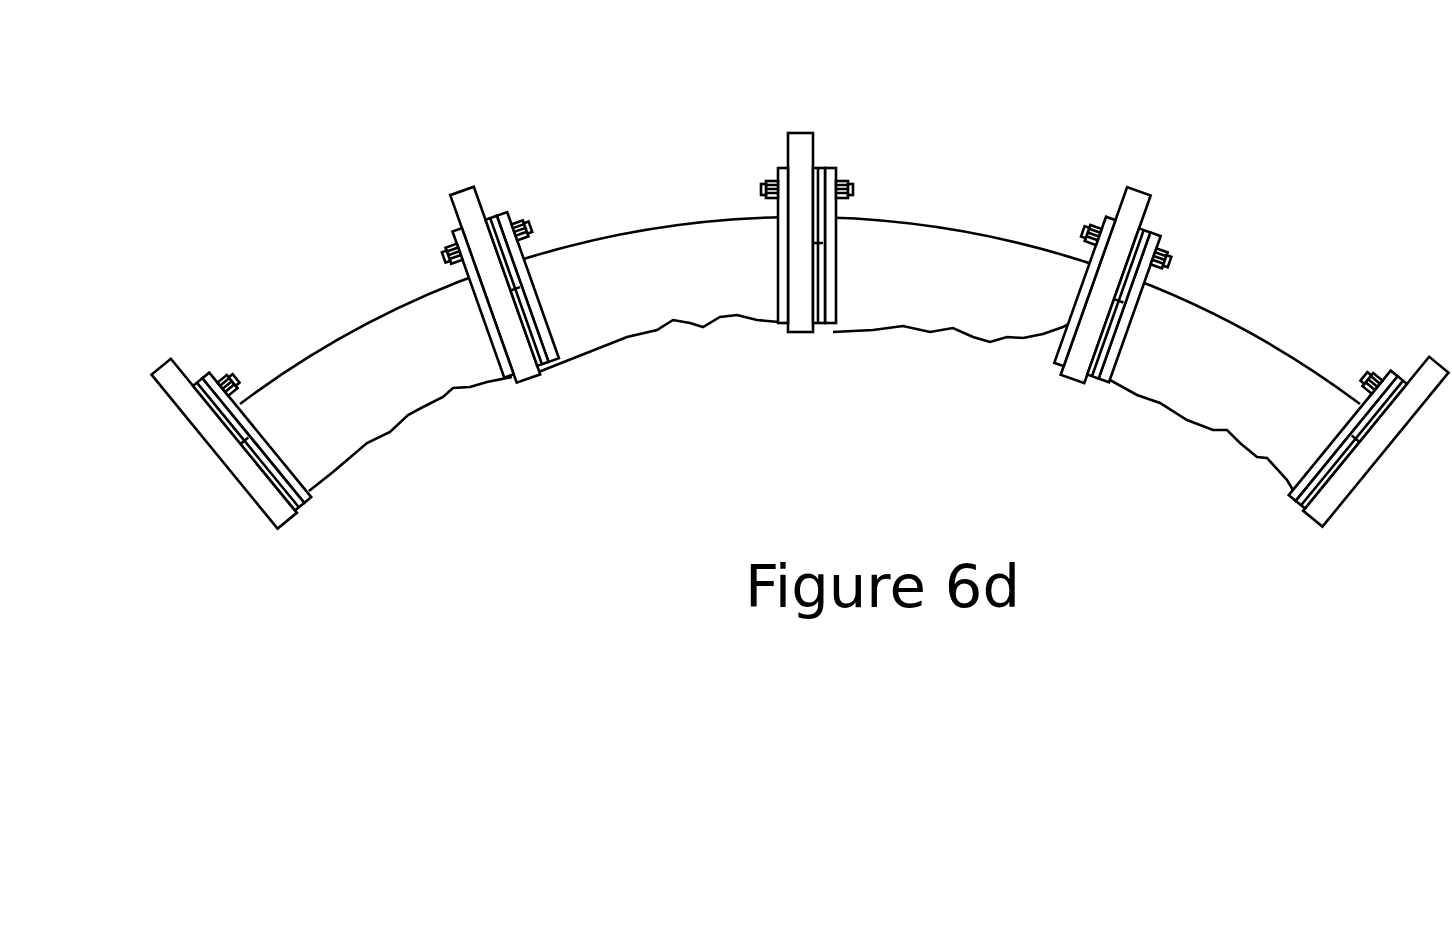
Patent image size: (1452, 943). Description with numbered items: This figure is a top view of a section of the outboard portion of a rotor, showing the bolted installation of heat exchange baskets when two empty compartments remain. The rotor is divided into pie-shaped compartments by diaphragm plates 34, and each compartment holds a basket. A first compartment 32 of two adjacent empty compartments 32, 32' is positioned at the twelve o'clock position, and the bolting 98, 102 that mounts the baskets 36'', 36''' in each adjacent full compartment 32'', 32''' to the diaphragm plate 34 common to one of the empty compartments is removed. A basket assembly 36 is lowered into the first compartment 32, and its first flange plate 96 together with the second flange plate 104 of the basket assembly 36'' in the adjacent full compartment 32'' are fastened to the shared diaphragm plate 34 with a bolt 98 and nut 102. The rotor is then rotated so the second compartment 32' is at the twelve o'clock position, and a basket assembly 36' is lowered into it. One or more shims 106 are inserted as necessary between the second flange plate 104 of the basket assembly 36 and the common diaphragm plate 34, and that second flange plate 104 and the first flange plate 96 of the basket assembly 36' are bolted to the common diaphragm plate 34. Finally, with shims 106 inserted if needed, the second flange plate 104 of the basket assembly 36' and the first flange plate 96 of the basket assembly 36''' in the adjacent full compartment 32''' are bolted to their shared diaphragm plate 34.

The compartment 32 is at (955, 192).
The compartment 32' is at (645, 192).
The compartment 32'' is at (1235, 304).
The compartment 32''' is at (365, 313).
The diaphragm plate 34 is at (173, 377).
The heat exchange basket 36 is at (951, 306).
The basket assembly 36' is at (657, 317).
The basket assembly 36'' is at (1186, 422).
The basket assembly 36''' is at (410, 424).
The first flange plate 96 is at (501, 352).
The bolt 98 is at (854, 190).
The nut 102 is at (764, 190).
The second flange plate 104 is at (558, 343).
The shim 106 is at (532, 272).